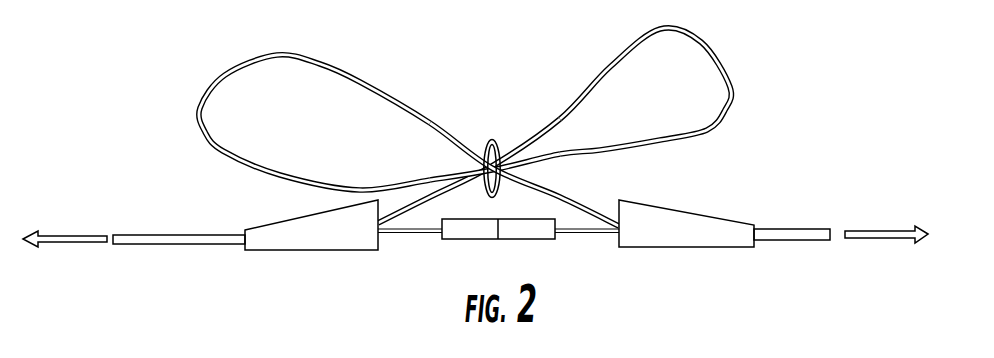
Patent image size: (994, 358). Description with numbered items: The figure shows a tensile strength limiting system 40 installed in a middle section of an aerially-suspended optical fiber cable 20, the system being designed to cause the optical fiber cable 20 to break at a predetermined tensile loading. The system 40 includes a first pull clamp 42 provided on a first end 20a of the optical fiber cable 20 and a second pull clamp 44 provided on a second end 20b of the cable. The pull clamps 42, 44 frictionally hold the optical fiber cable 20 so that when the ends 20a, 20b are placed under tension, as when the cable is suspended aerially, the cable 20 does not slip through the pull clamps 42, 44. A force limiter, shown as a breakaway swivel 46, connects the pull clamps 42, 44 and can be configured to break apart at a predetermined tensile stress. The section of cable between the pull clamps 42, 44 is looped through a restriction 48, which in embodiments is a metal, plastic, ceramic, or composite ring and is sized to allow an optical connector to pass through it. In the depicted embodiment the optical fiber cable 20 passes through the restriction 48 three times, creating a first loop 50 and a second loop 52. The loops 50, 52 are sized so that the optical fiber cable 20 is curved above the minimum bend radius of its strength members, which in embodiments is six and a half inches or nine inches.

The optical fiber cable 20 is at (733, 90).
The first end 20a is at (140, 236).
The second end 20b is at (808, 231).
The tensile strength limiting system 40 is at (150, 121).
The first pull clamp 42 is at (283, 227).
The second pull clamp 44 is at (726, 219).
The breakaway swivel 46 is at (478, 234).
The restriction 48 is at (490, 142).
The first loop 50 is at (237, 63).
The second loop 52 is at (707, 43).